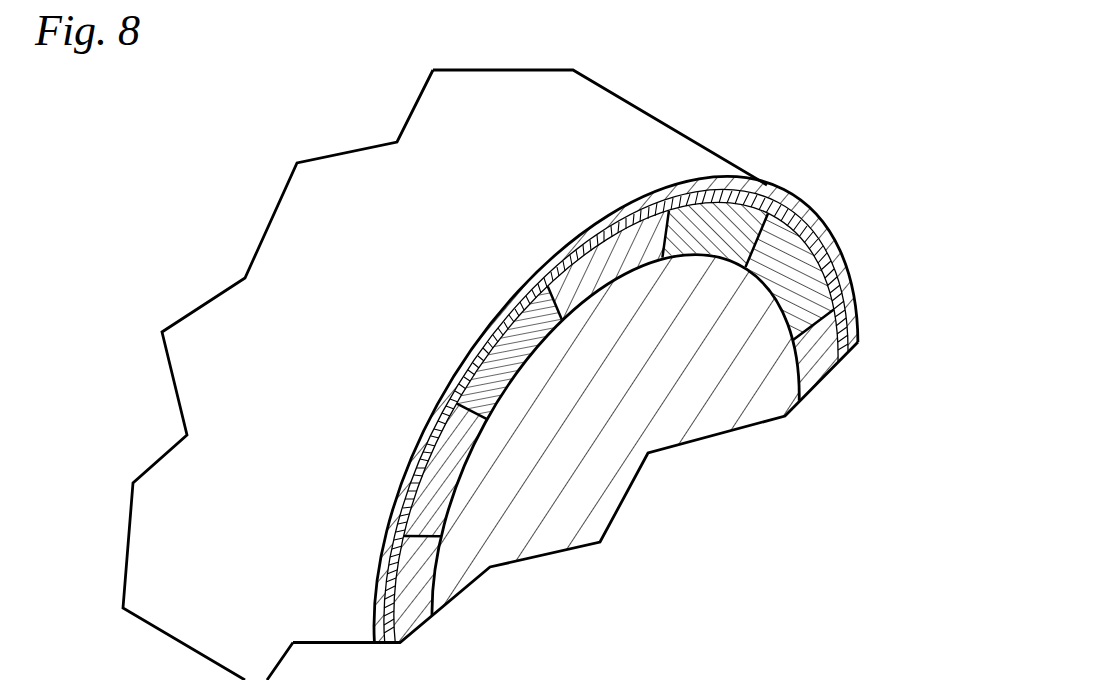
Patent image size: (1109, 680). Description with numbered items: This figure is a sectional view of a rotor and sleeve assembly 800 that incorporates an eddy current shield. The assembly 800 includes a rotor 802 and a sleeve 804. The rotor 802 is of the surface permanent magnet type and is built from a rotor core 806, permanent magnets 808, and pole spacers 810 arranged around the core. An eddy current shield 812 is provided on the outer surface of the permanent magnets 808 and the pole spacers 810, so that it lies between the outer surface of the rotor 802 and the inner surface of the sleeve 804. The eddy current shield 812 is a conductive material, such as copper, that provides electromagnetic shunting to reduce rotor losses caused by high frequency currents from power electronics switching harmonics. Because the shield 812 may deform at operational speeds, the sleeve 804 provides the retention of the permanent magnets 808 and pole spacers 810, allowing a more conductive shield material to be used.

The rotor and sleeve assembly 800 is at (713, 92).
The rotor 802 is at (617, 389).
The sleeve 804 is at (318, 275).
The rotor core 806 is at (677, 418).
The permanent magnets 808 is at (782, 250).
The pole spacers 810 is at (633, 247).
The eddy current shield 812 is at (838, 263).